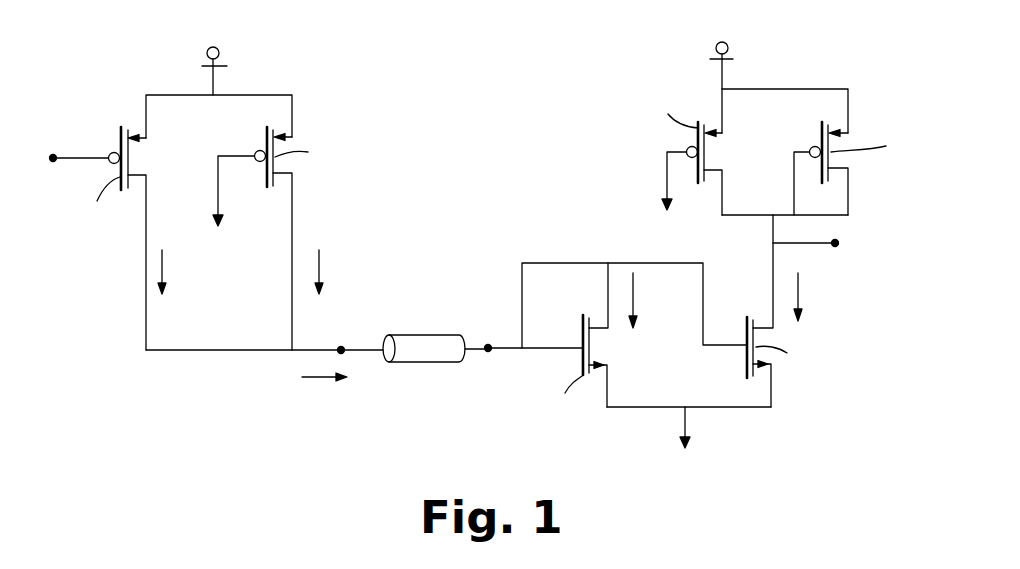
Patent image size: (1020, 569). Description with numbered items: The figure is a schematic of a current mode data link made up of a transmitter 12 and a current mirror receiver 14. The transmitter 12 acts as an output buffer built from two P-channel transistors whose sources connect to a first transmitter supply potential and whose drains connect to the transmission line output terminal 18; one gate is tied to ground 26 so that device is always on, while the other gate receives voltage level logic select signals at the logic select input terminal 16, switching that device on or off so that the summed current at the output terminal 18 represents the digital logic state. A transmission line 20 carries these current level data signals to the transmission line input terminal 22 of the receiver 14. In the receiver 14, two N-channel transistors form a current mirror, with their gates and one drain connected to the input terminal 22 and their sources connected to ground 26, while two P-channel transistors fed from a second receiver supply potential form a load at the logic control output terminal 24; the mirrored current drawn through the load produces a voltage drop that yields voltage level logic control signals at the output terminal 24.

The transmitter 12 is at (287, 74).
The current mirror receiver 14 is at (815, 72).
The logic select input terminal 16 is at (53, 156).
The transmission line output terminal 18 is at (341, 345).
The transmission line 20 is at (424, 361).
The transmission line input terminal 22 is at (489, 353).
The logic control output terminal 24 is at (838, 246).
The ground 26 is at (223, 224).